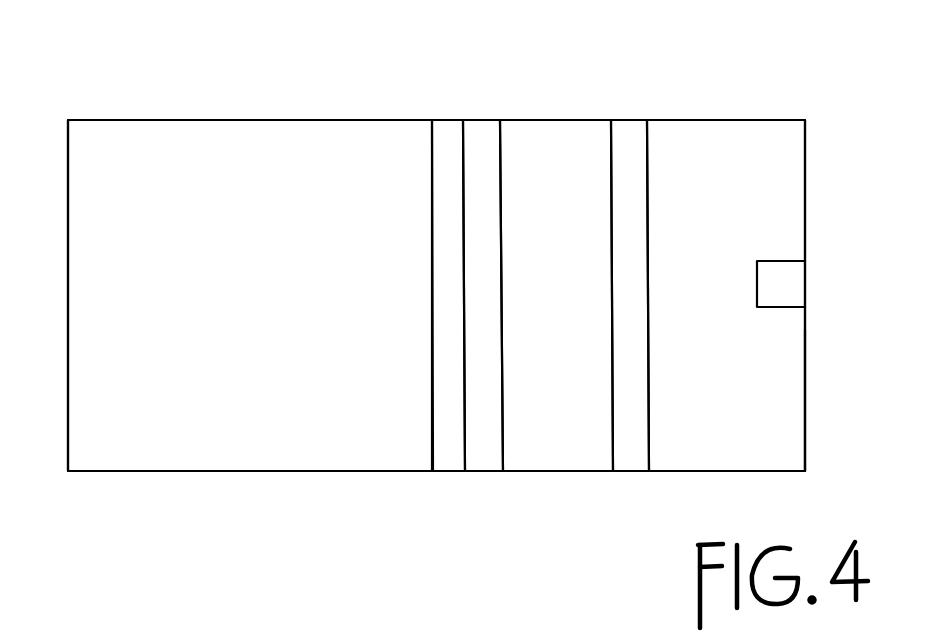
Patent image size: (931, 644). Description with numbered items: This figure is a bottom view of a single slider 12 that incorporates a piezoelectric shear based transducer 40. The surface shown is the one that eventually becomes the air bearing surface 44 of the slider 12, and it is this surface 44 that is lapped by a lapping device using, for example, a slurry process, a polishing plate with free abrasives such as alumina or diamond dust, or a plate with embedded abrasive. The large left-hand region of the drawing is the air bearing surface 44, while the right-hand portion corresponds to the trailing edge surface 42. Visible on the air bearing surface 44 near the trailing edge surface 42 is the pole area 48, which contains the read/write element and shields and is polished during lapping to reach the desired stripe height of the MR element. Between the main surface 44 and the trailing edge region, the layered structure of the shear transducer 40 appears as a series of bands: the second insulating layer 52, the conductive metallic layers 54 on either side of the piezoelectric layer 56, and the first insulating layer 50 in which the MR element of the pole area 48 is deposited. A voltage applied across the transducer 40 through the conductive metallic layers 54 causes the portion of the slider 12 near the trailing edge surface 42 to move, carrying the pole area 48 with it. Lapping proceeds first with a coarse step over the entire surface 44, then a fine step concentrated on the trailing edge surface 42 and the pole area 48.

The slider 12 is at (123, 104).
The shear based transducer 40 is at (531, 487).
The trailing edge surface 42 is at (813, 403).
The air bearing surface 44 is at (280, 321).
The pole area 48 is at (790, 268).
The first insulating layer 50 is at (705, 132).
The second insulating layer 52 is at (443, 125).
The conductive metallic layers 54 is at (478, 128).
The piezoelectric layer 56 is at (528, 128).